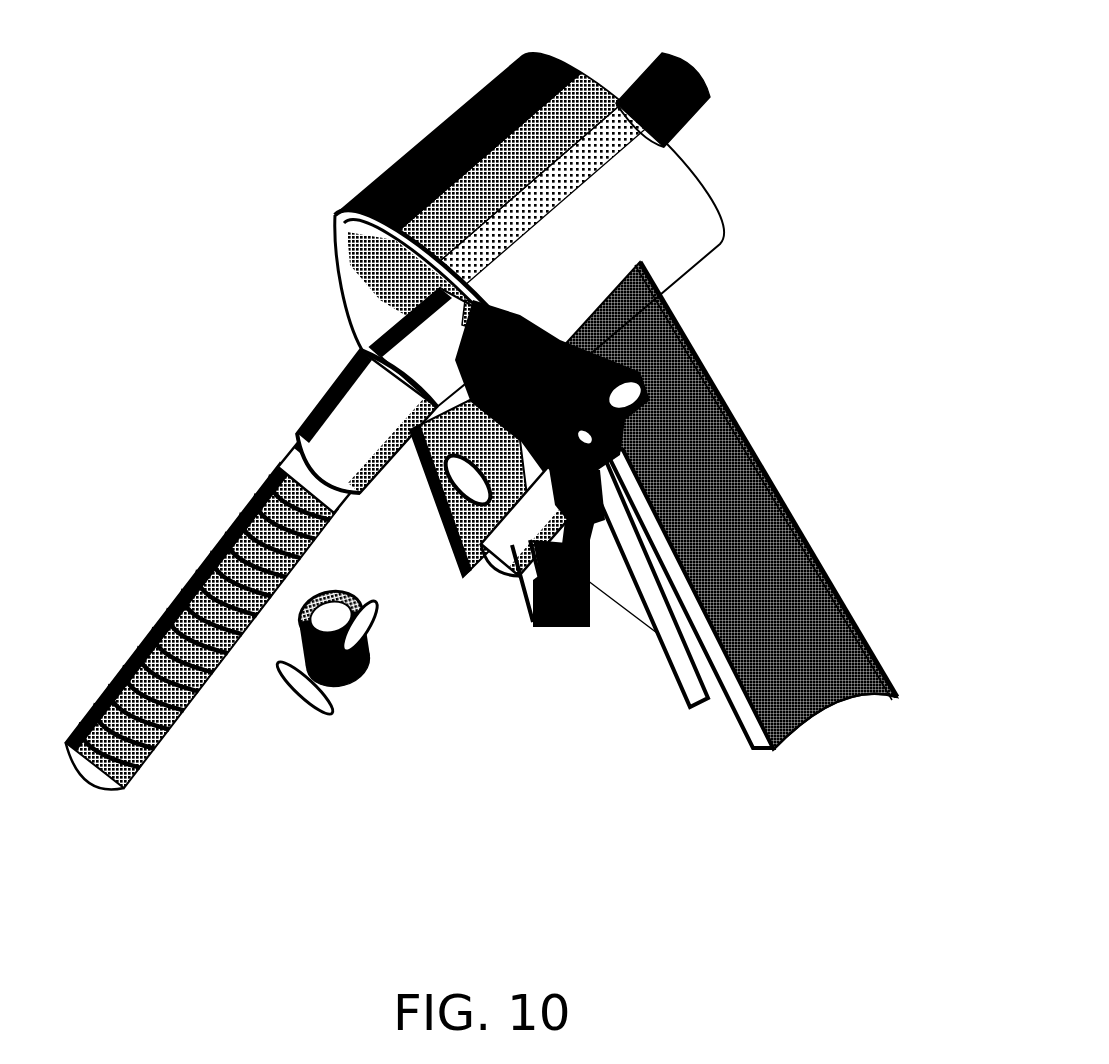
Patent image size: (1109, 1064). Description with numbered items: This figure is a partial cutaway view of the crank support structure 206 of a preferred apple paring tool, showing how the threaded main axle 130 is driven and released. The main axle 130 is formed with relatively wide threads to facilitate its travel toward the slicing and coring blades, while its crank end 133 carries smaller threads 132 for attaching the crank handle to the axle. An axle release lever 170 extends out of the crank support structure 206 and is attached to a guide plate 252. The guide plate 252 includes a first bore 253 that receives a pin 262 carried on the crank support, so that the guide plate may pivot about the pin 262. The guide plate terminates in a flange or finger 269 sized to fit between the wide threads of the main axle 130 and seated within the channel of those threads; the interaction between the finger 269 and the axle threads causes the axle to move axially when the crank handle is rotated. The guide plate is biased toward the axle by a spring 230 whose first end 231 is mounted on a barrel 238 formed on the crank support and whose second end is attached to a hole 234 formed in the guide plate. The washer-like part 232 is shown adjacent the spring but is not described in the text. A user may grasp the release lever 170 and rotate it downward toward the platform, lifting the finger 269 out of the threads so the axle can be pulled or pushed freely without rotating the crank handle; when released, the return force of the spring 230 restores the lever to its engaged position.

The main axle 130 is at (170, 585).
The smaller threads 132 is at (693, 123).
The crank end 133 is at (710, 88).
The axle release lever 170 is at (620, 395).
The crank support structure 206 is at (753, 630).
The spring 230 is at (350, 680).
The first end 231 is at (320, 710).
The washer 232 is at (377, 615).
The hole 234 is at (590, 437).
The barrel 238 is at (460, 480).
The guide plate 252 is at (603, 463).
The first bore 253 is at (573, 433).
The pin 262 is at (500, 557).
The flange or finger 269 is at (495, 328).